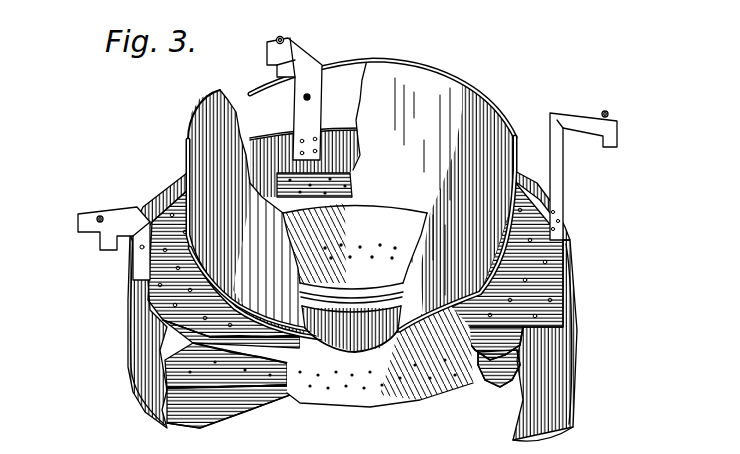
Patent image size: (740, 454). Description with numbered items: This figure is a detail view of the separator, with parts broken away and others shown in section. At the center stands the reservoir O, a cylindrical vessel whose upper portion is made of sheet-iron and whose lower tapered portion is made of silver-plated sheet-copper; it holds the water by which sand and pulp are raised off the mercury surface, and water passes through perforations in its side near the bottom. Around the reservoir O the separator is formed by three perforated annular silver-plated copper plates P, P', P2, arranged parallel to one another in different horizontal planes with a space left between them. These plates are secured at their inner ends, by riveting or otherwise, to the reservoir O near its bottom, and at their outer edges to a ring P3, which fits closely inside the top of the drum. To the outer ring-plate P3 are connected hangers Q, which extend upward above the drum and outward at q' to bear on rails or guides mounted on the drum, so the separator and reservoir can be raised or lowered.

The reservoir O is at (351, 206).
The perforated annular plate P is at (355, 254).
The perforated annular plate P' is at (344, 364).
The perforated annular plate P2 is at (283, 388).
The ring P3 is at (580, 307).
The hanger Q is at (316, 118).
The outward-extending portion of hanger q' is at (352, 129).